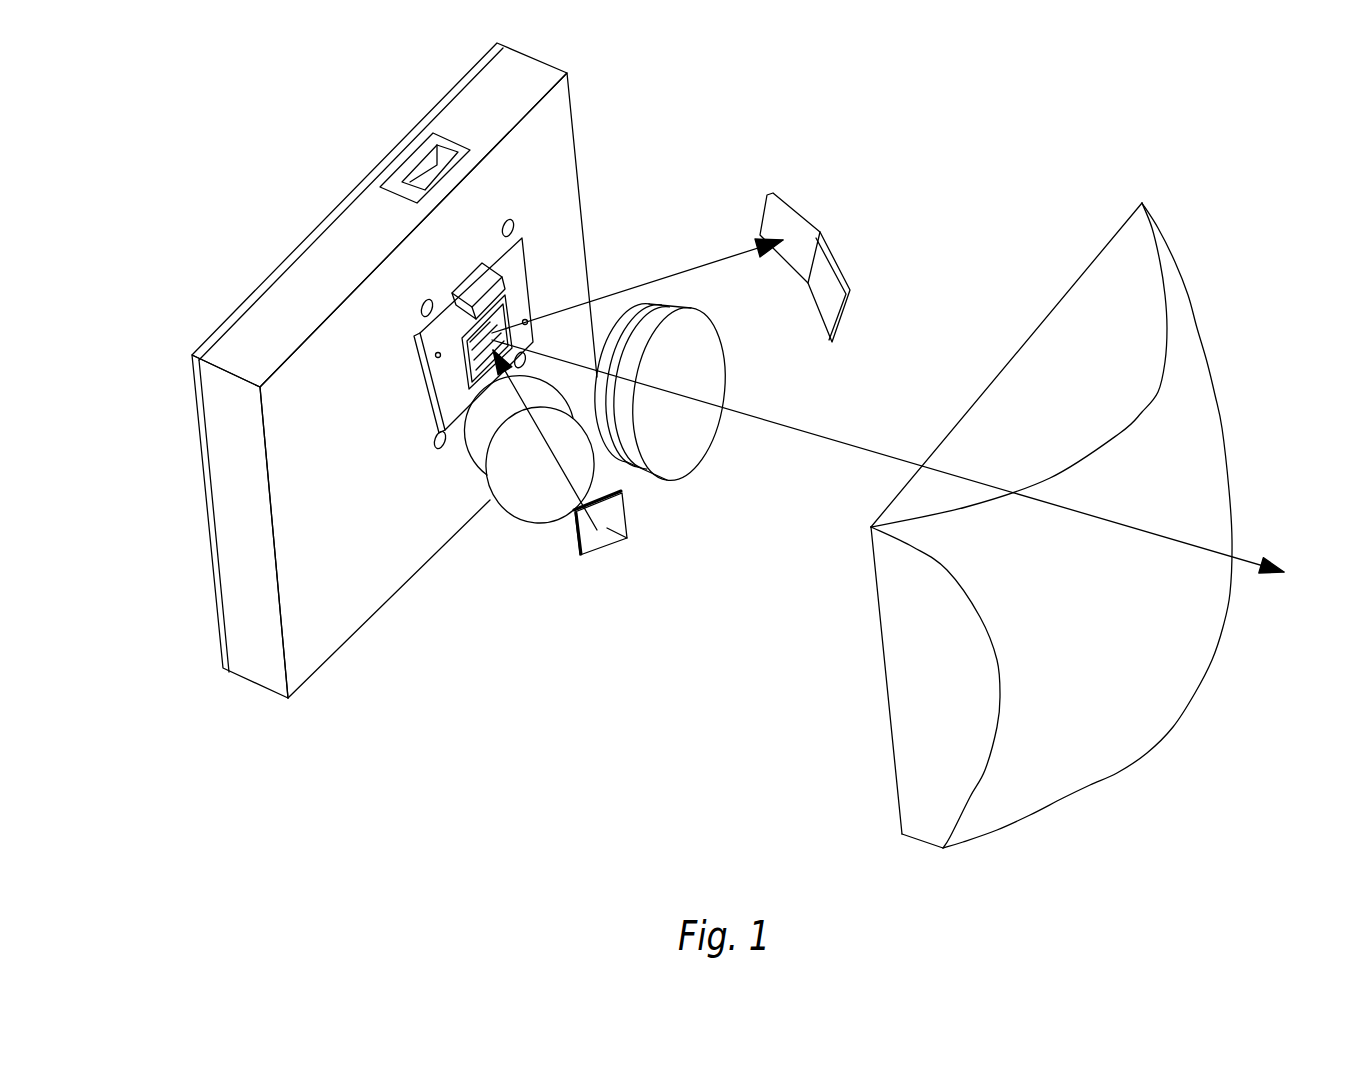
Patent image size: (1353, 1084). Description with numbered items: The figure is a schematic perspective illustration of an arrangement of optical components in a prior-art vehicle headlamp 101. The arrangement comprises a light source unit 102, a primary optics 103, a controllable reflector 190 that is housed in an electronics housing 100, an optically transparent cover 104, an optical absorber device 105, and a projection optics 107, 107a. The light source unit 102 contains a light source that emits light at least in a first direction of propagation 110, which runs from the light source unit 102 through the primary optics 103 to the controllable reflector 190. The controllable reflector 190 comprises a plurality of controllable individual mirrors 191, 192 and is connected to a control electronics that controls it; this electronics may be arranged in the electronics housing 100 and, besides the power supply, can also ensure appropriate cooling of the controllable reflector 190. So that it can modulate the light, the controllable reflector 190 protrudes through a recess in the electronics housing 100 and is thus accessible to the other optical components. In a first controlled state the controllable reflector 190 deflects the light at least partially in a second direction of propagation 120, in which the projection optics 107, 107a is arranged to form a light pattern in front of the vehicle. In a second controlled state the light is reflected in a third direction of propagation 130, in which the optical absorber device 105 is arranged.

The electronics housing 100 is at (242, 550).
The vehicle headlamp 101 is at (282, 207).
The light source unit 102 is at (628, 537).
The primary optics 103 is at (523, 462).
The optically transparent cover 104 is at (430, 412).
The optical absorber device 105 is at (837, 240).
The projection optics 107 is at (1170, 360).
The projection optics 107a is at (677, 407).
The first direction of propagation 110 is at (545, 440).
The second direction of propagation 120 is at (888, 456).
The third direction of propagation 130 is at (637, 281).
The controllable reflector 190 is at (488, 340).
The controllable individual mirror 191 is at (524, 322).
The controllable individual mirror 192 is at (478, 298).